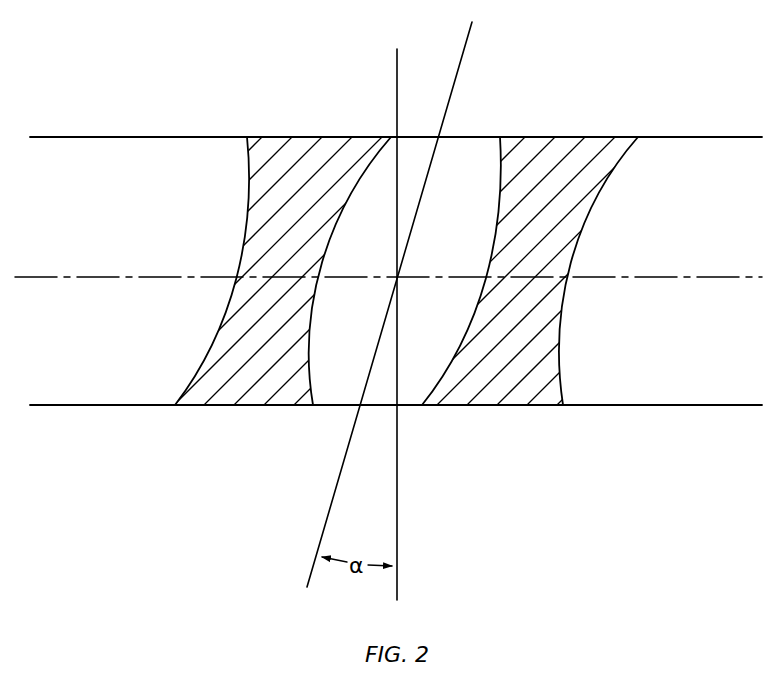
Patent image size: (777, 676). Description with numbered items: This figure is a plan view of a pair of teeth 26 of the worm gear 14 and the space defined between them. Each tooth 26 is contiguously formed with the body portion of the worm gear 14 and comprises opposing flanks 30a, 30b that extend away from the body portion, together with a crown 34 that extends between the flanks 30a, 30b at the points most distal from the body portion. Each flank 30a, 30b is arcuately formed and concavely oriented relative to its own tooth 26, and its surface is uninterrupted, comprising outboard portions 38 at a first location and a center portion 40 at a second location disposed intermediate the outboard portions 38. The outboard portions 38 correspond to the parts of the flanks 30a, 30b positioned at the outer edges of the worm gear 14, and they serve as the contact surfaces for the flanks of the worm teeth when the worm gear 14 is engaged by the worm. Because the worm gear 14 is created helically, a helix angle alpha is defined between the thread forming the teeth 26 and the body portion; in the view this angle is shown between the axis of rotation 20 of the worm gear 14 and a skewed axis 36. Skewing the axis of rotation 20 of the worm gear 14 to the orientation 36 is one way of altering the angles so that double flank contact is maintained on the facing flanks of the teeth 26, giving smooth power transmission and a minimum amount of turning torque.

The worm gear 14 is at (266, 70).
The axis of rotation 20 is at (398, 585).
The teeth 26 is at (260, 134).
The flank 30a is at (206, 344).
The flank 30b is at (568, 358).
The crown 34 is at (313, 137).
The skewed axis of rotation of the worm gear 36 is at (308, 575).
The outboard portions 38 is at (365, 172).
The center portion 40 is at (318, 270).